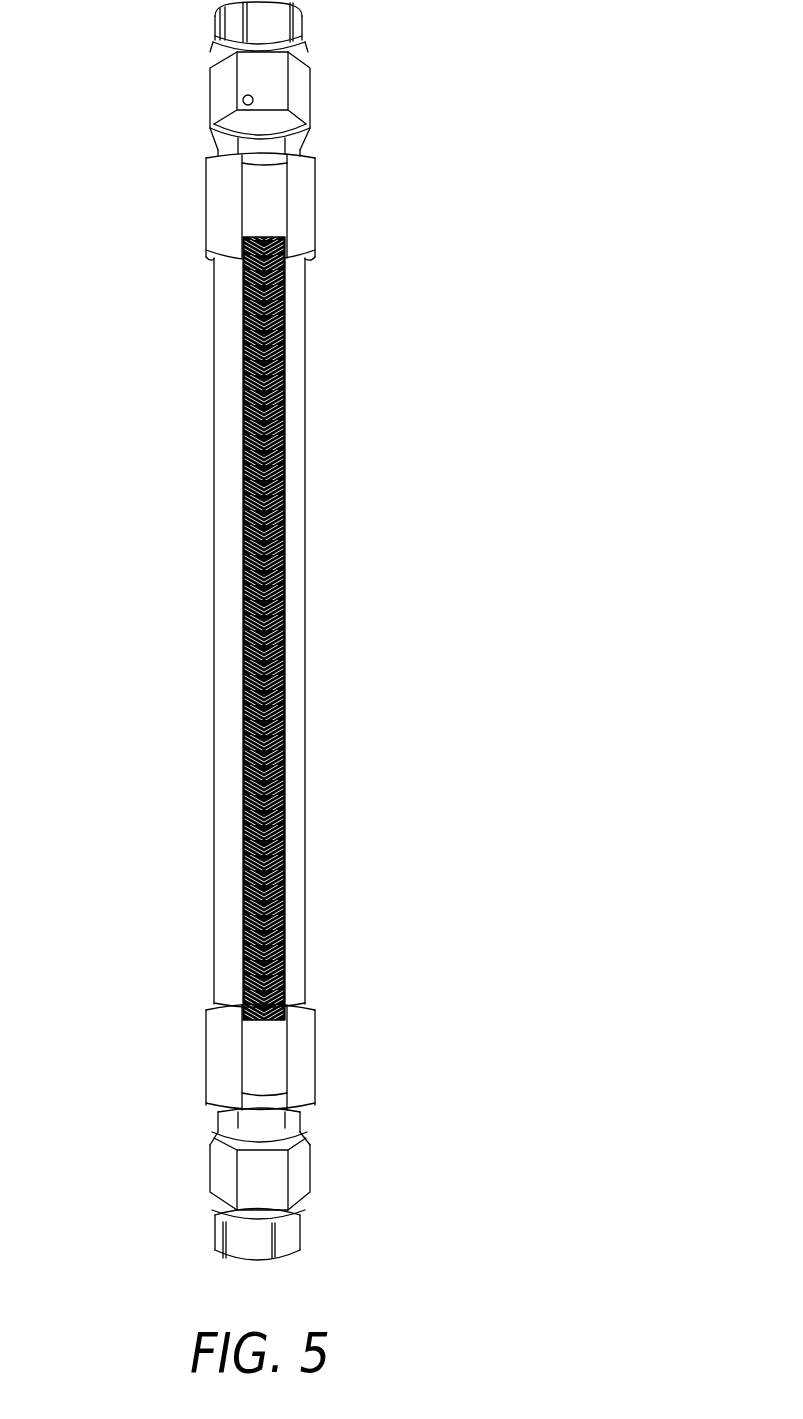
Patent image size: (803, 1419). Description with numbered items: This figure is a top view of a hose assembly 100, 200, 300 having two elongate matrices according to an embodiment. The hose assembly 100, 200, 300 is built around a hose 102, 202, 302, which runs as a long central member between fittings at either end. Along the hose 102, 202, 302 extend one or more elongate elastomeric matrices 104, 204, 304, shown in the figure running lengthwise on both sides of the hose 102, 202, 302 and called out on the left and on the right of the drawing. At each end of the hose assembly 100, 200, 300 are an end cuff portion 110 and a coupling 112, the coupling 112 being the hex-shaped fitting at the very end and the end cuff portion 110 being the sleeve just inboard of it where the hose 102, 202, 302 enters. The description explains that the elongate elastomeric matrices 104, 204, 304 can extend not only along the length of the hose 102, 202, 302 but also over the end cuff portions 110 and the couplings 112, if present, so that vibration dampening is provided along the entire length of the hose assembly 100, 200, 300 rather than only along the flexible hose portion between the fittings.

The hose assembly 100 is at (349, 630).
The hose assembly 200 is at (349, 630).
The hose assembly 300 is at (349, 630).
The hose 102 is at (161, 628).
The hose 202 is at (161, 628).
The hose 302 is at (242, 341).
The elongate elastomeric matrix 104 is at (248, 631).
The elongate elastomeric matrix 204 is at (248, 631).
The elongate elastomeric matrix 304 is at (248, 631).
The end cuff portion 110 is at (265, 195).
The coupling 112 is at (273, 83).